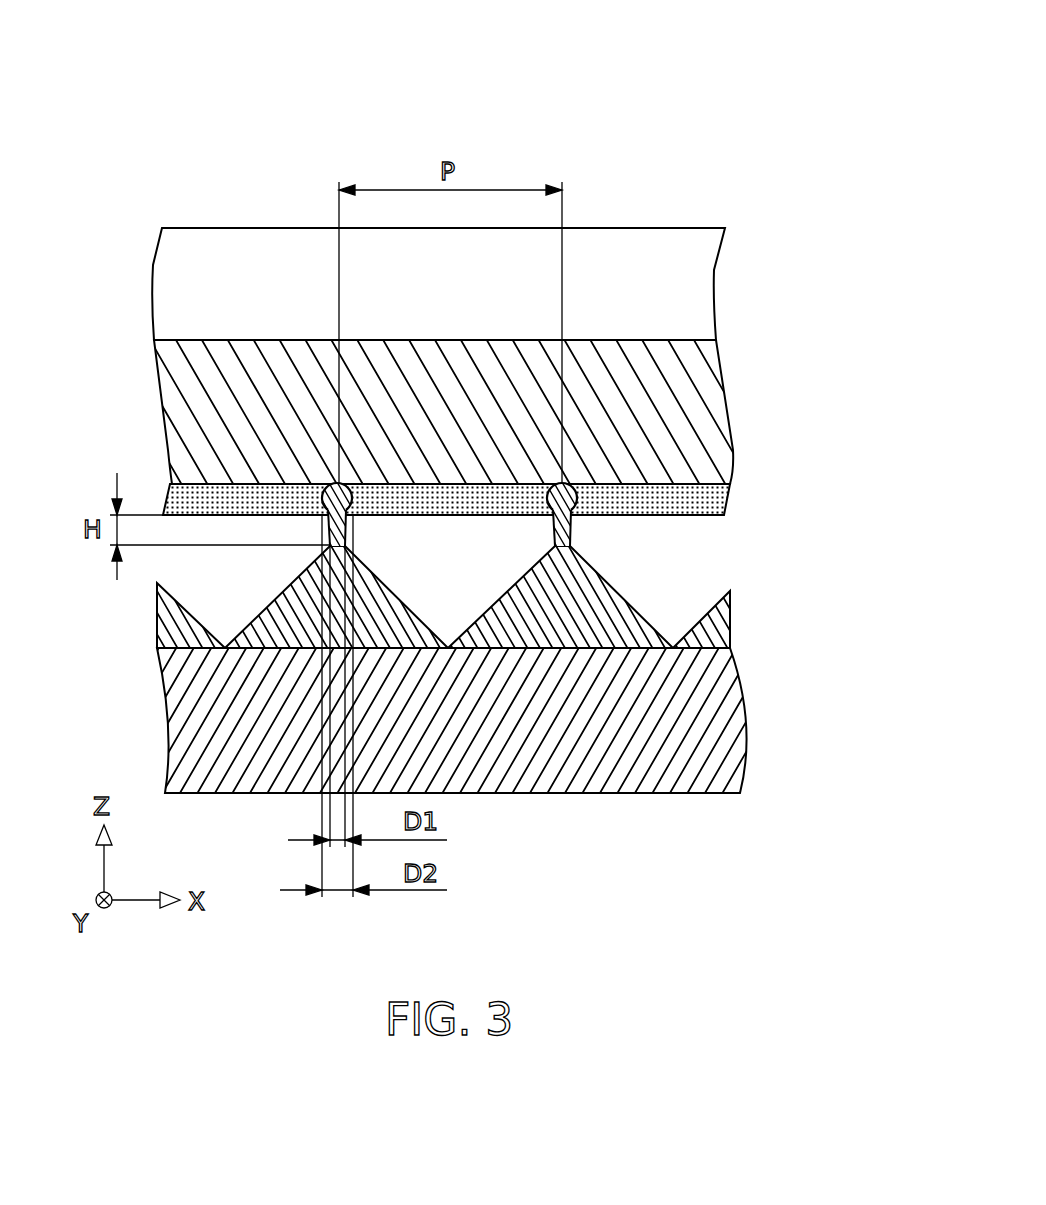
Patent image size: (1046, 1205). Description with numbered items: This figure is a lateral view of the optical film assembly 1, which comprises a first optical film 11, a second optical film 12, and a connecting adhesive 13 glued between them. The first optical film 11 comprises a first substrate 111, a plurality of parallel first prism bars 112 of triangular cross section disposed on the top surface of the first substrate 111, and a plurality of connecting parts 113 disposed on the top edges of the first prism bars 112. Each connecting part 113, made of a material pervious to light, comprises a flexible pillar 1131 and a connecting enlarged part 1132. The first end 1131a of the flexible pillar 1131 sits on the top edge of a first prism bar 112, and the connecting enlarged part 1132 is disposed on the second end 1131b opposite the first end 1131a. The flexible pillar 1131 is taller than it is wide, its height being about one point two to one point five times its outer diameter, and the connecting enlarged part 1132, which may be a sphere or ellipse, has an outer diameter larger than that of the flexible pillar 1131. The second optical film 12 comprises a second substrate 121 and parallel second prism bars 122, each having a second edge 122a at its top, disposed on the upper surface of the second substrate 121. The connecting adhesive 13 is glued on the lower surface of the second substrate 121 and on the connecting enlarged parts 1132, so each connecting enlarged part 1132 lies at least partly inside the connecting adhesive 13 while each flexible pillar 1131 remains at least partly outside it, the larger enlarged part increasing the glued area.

The optical film assembly 1 is at (765, 56).
The first optical film 11 is at (762, 636).
The first substrate 111 is at (580, 735).
The first prism bar 112 is at (565, 607).
The connecting part 113 is at (530, 527).
The flexible pillar 1131 is at (571, 541).
The first end of the flexible pillar 1131a is at (554, 542).
The second end of the flexible pillar 1131b is at (571, 520).
The connecting enlarged part 1132 is at (575, 494).
The second optical film 12 is at (762, 316).
The second substrate 121 is at (185, 413).
The second prism bar 122 is at (185, 283).
The second edge 122a is at (240, 228).
The connecting adhesive 13 is at (714, 497).